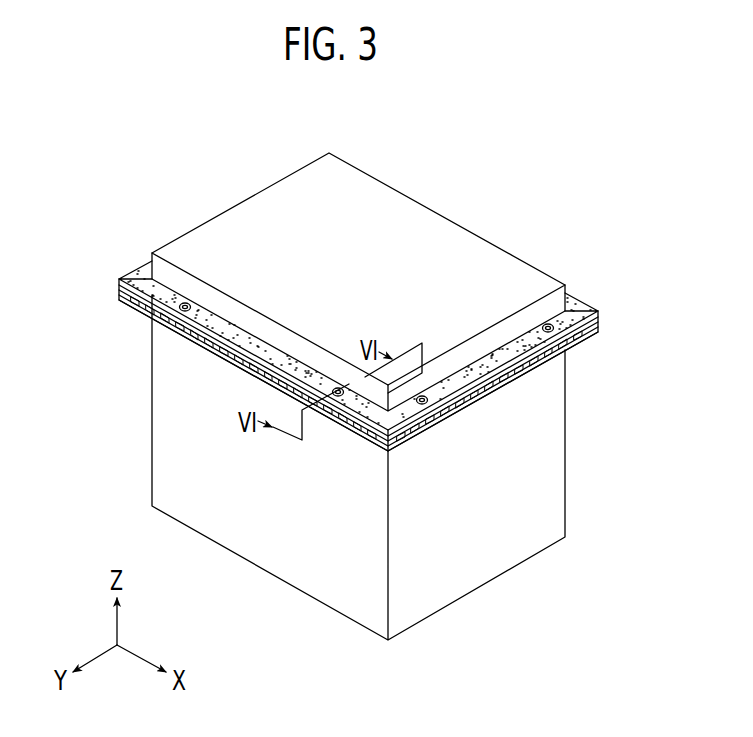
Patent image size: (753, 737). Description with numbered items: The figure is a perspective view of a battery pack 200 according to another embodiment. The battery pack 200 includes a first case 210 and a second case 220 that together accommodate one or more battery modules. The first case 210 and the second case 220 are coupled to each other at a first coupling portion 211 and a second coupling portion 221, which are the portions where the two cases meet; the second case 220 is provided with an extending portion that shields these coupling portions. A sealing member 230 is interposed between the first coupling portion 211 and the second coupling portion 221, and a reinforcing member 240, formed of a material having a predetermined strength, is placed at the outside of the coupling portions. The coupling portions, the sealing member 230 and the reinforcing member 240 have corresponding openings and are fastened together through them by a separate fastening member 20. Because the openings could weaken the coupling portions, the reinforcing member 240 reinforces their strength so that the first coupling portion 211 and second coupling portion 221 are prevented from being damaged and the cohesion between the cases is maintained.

The battery pack 200 is at (502, 165).
The first case 210 is at (556, 479).
The first coupling portion 211 is at (128, 302).
The second case 220 is at (277, 213).
The second coupling portion 221 is at (119, 286).
The sealing member 230 is at (608, 322).
The reinforcing member 240 is at (586, 297).
The fastening member 20 is at (333, 390).